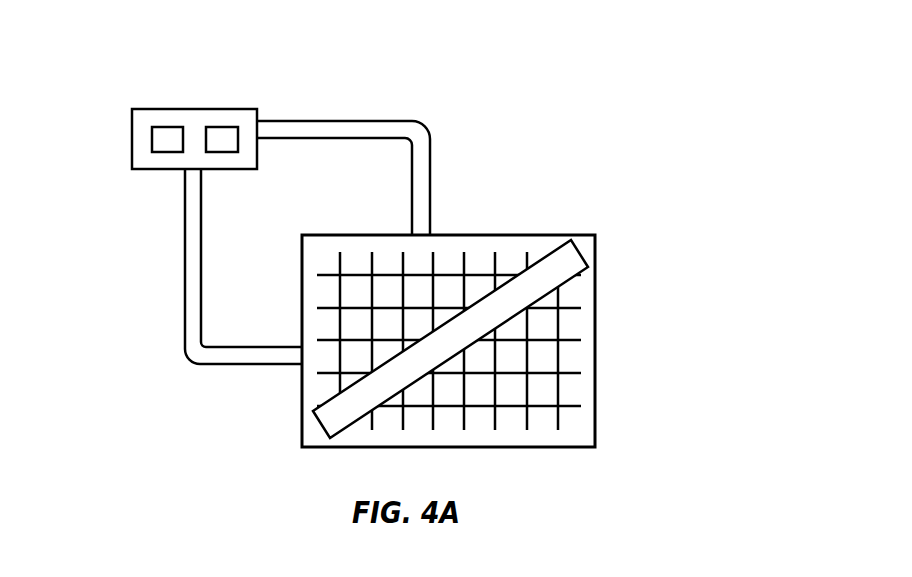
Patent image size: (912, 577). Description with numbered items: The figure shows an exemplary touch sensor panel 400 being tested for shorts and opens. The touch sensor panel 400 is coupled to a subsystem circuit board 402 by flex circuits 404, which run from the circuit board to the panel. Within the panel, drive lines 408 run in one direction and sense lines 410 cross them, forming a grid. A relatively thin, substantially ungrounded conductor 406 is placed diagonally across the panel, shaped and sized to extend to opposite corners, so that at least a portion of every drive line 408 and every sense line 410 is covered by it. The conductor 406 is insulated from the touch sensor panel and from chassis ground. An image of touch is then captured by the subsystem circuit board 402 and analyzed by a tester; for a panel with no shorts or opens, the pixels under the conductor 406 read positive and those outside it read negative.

The touch sensor panel 400 is at (597, 330).
The subsystem circuit board 402 is at (193, 108).
The flex circuits 404 is at (150, 277).
The substantially ungrounded conductor 406 is at (571, 240).
The drive line 408 is at (560, 390).
The sense line 410 is at (569, 407).